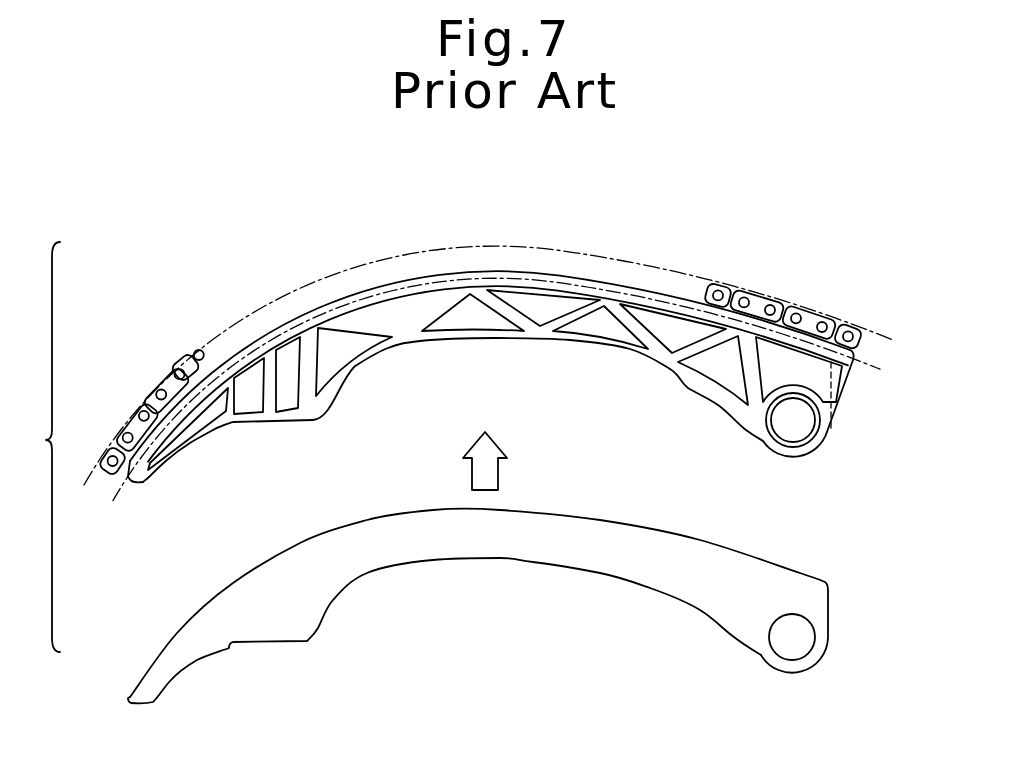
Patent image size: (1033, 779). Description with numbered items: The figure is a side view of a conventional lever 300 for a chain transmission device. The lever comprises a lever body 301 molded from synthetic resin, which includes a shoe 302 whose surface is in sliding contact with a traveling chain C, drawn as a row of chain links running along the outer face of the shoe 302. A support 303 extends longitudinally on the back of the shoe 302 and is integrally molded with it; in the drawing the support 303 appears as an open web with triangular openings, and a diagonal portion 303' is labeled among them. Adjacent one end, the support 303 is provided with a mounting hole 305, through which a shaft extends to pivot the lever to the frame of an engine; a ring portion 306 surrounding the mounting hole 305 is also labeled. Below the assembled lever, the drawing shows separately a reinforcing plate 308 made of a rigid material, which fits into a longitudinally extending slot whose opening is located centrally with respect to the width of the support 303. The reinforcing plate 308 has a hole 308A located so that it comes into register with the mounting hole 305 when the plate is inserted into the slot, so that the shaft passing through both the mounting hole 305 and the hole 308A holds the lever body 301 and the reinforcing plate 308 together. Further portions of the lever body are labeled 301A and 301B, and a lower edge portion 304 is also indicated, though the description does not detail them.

The lever 300 is at (612, 199).
The traveling chain C is at (166, 378).
The lever body 301 is at (847, 398).
The lower surface of guide body 301A is at (735, 430).
The foot portion of guide body 301B is at (277, 435).
The shoe 302 is at (432, 283).
The support 303 is at (374, 341).
The diagonal rib 303' is at (678, 355).
The lower rail of guide body 304 is at (364, 362).
The mounting hole 305 is at (783, 433).
The boss ring 306 is at (821, 432).
The reinforcing plate 308 is at (557, 552).
The hole 308A is at (776, 648).